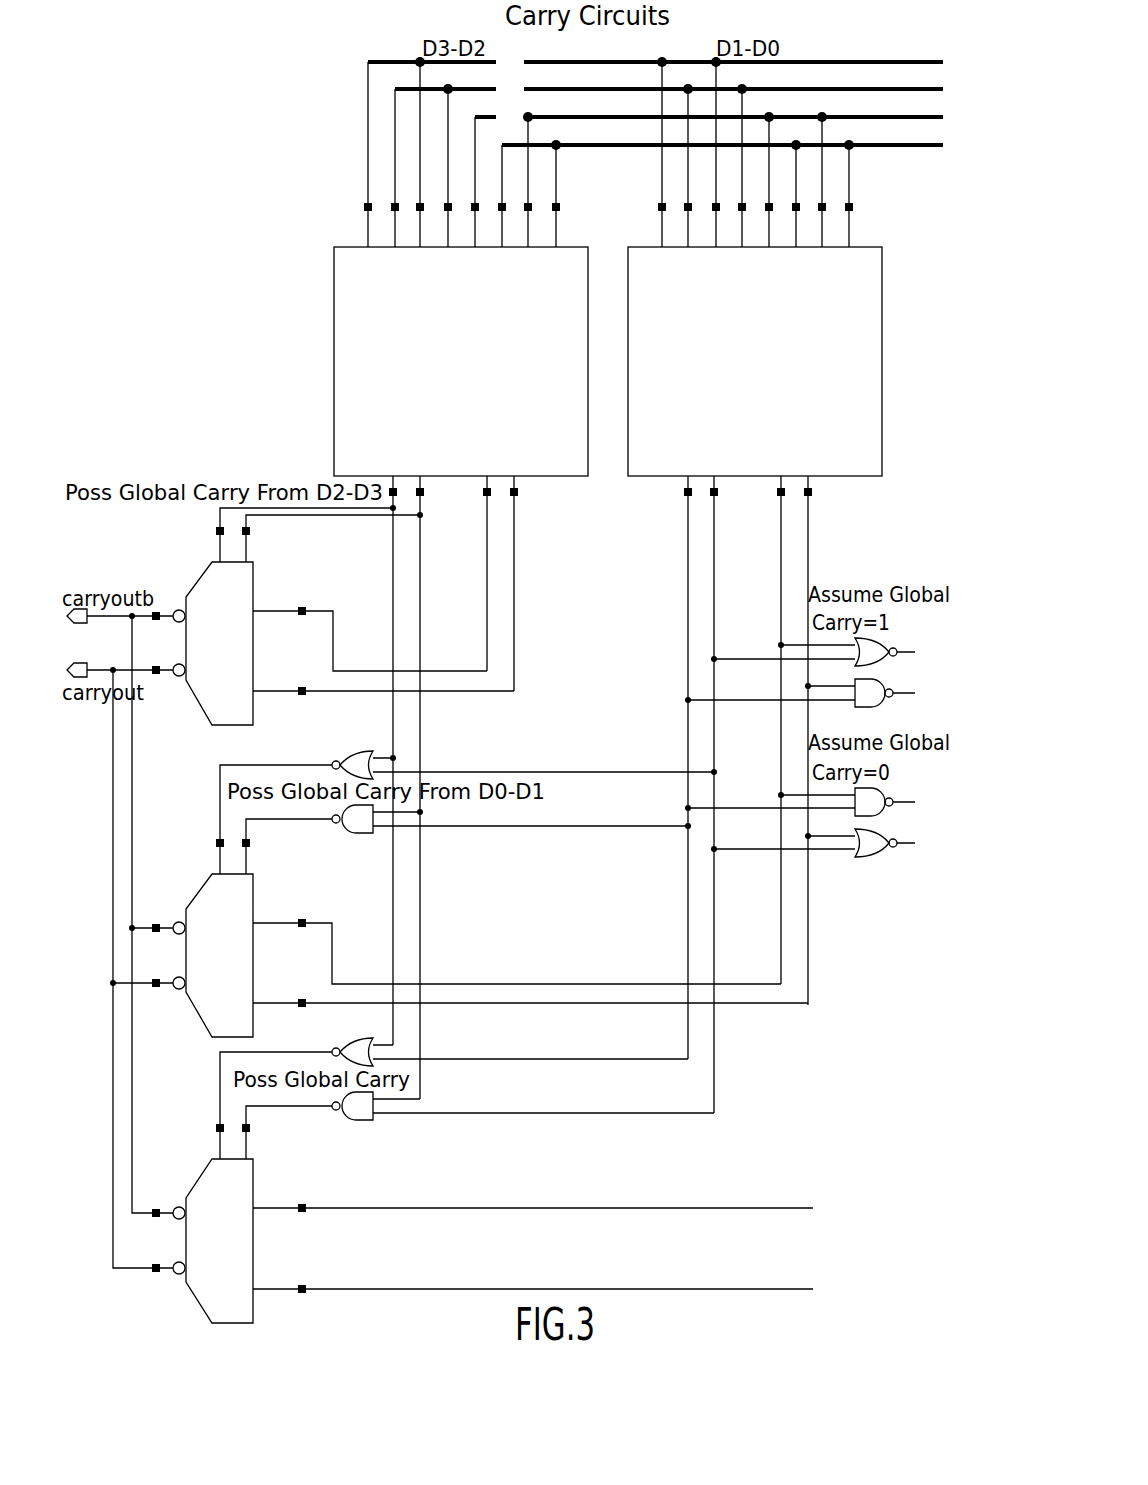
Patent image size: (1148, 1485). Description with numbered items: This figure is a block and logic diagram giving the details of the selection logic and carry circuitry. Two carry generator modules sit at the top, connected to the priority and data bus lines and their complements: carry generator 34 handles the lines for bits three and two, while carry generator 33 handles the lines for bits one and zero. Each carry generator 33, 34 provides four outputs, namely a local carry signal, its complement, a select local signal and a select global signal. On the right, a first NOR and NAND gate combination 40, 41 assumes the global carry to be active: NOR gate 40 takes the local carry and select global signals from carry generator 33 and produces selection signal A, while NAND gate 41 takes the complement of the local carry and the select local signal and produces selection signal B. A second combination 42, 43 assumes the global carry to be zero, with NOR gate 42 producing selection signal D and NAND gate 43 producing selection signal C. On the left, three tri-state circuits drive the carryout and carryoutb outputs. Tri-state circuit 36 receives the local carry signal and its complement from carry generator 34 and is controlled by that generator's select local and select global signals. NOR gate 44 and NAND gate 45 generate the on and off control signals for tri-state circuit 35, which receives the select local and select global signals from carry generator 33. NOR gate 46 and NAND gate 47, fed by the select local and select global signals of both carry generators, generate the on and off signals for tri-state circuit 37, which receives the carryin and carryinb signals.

The carry generator 33 is at (882, 392).
The carry generator 34 is at (334, 402).
The tri-state circuit 35 is at (204, 890).
The tri-state circuit 36 is at (204, 578).
The tri-state circuit 37 is at (204, 1175).
The NOR gate 40 is at (887, 640).
The NAND gate 41 is at (878, 703).
The NOR gate 42 is at (880, 856).
The NAND gate 43 is at (886, 790).
The NOR gate 44 is at (352, 751).
The NAND gate 45 is at (352, 833).
The NOR gate 46 is at (353, 1038).
The NAND gate 47 is at (356, 1120).